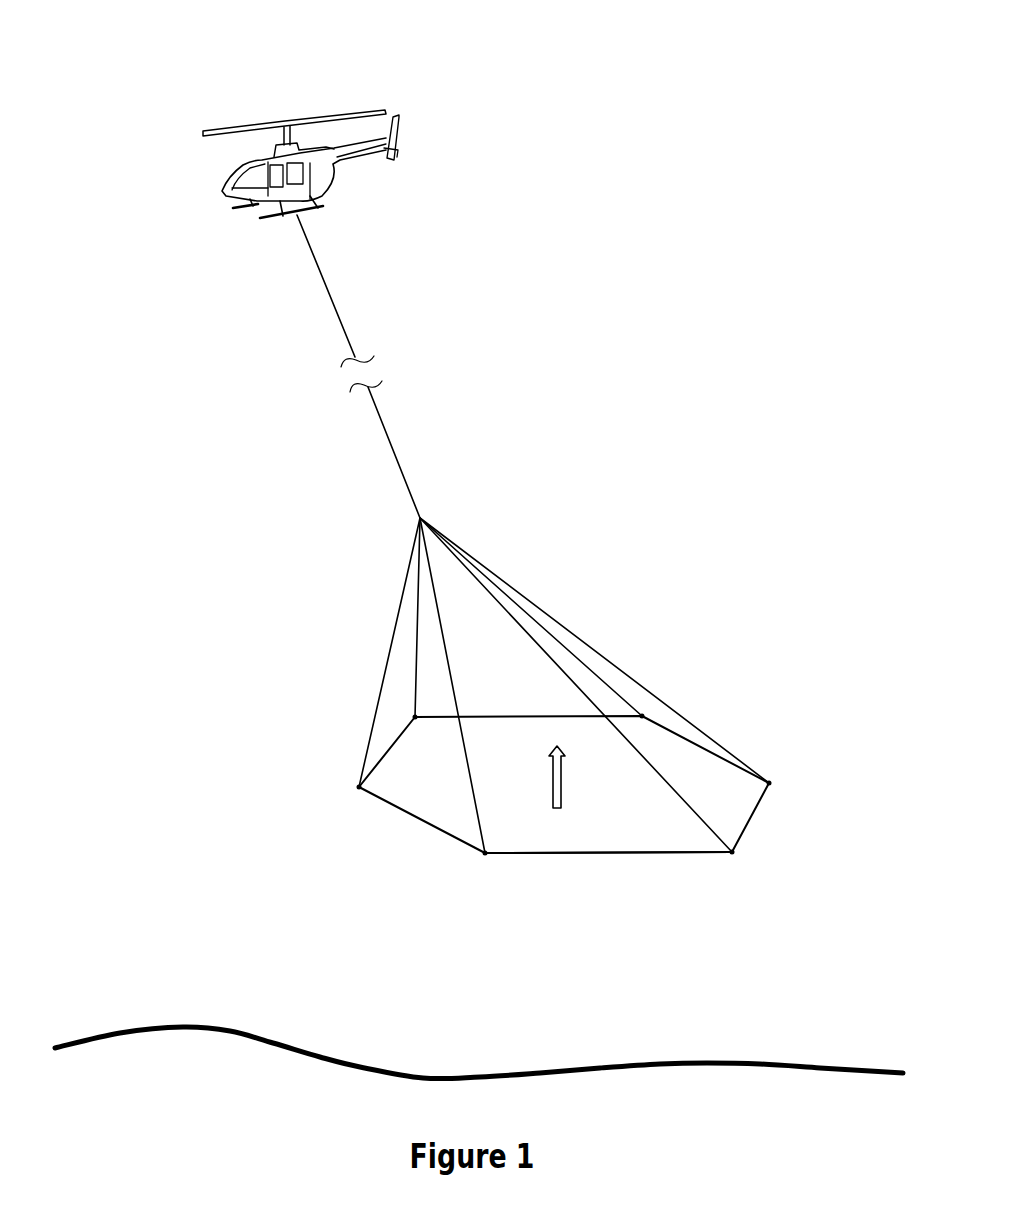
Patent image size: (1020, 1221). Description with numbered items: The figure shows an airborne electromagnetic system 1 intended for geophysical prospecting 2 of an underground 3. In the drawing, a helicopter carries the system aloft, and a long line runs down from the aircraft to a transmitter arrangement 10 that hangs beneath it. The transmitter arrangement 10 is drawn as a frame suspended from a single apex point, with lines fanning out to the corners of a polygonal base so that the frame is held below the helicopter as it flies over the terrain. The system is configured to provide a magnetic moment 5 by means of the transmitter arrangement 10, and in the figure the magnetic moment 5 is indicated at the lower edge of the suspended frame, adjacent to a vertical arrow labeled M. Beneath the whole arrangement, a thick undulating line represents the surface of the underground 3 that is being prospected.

The airborne electromagnetic system 1 is at (527, 209).
The geophysical prospecting 2 is at (681, 334).
The transmitter arrangement 10 is at (303, 589).
The underground 3 is at (317, 1125).
The magnetic moment 5 is at (578, 907).
The direction of movement arrow M is at (557, 820).